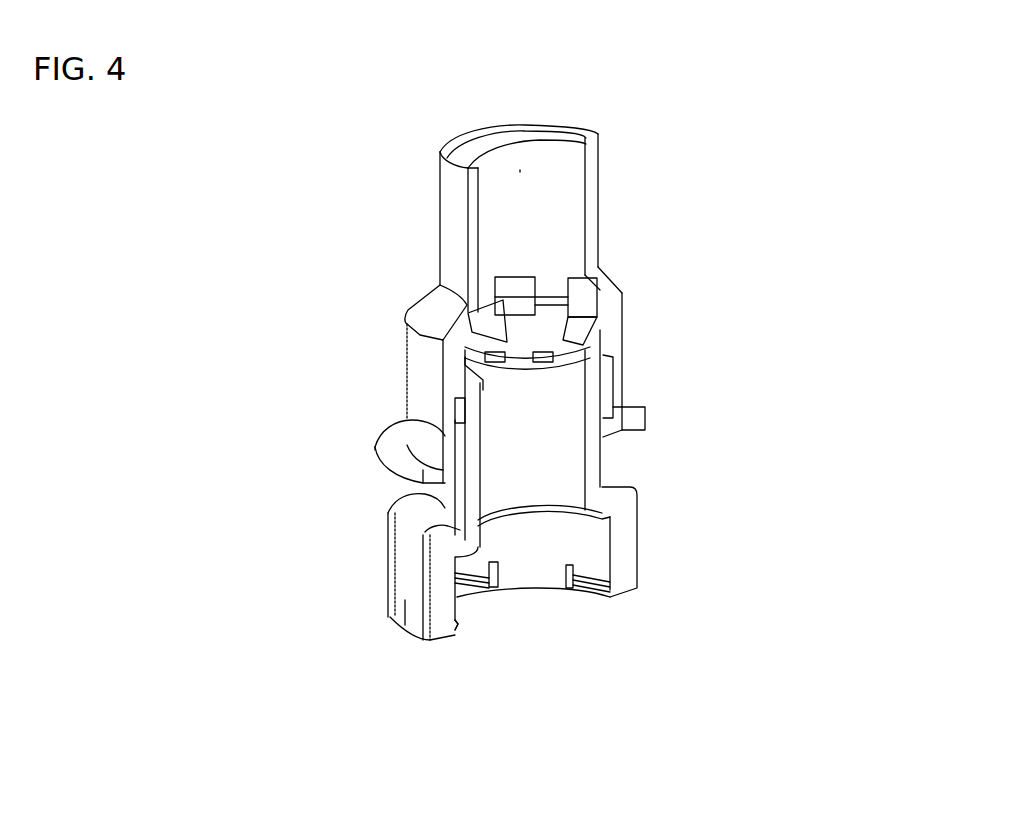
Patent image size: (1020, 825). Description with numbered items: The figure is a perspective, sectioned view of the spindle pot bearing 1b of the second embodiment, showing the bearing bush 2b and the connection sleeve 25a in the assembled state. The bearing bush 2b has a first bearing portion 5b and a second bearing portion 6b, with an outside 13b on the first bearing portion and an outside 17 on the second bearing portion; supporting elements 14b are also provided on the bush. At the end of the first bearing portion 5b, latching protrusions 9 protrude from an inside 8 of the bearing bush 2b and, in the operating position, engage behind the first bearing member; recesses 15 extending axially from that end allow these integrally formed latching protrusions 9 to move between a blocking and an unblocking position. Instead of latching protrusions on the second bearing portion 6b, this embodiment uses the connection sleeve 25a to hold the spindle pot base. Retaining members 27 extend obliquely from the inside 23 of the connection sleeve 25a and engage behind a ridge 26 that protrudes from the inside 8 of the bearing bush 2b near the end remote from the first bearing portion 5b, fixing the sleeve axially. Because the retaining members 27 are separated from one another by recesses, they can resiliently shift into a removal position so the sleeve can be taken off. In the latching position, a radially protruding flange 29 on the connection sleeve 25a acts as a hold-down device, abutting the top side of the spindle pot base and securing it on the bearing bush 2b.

The spindle pot bearing 1b is at (806, 178).
The bearing bush 2b is at (714, 434).
The first bearing portion 5b is at (660, 537).
The second bearing portion 6b is at (663, 360).
The inside of bearing bush 8 is at (609, 612).
The latching protrusions 9 is at (455, 630).
The outside of first bearing portion 13b is at (410, 553).
The supporting elements 14b is at (427, 615).
The recess 15 is at (488, 580).
The outside of second bearing portion 17 is at (661, 396).
The inside of connection sleeve 23 is at (593, 131).
The connection sleeve 25a is at (593, 198).
The ridge 26 is at (575, 330).
The retaining member 27 is at (557, 355).
The flange 29 is at (393, 453).